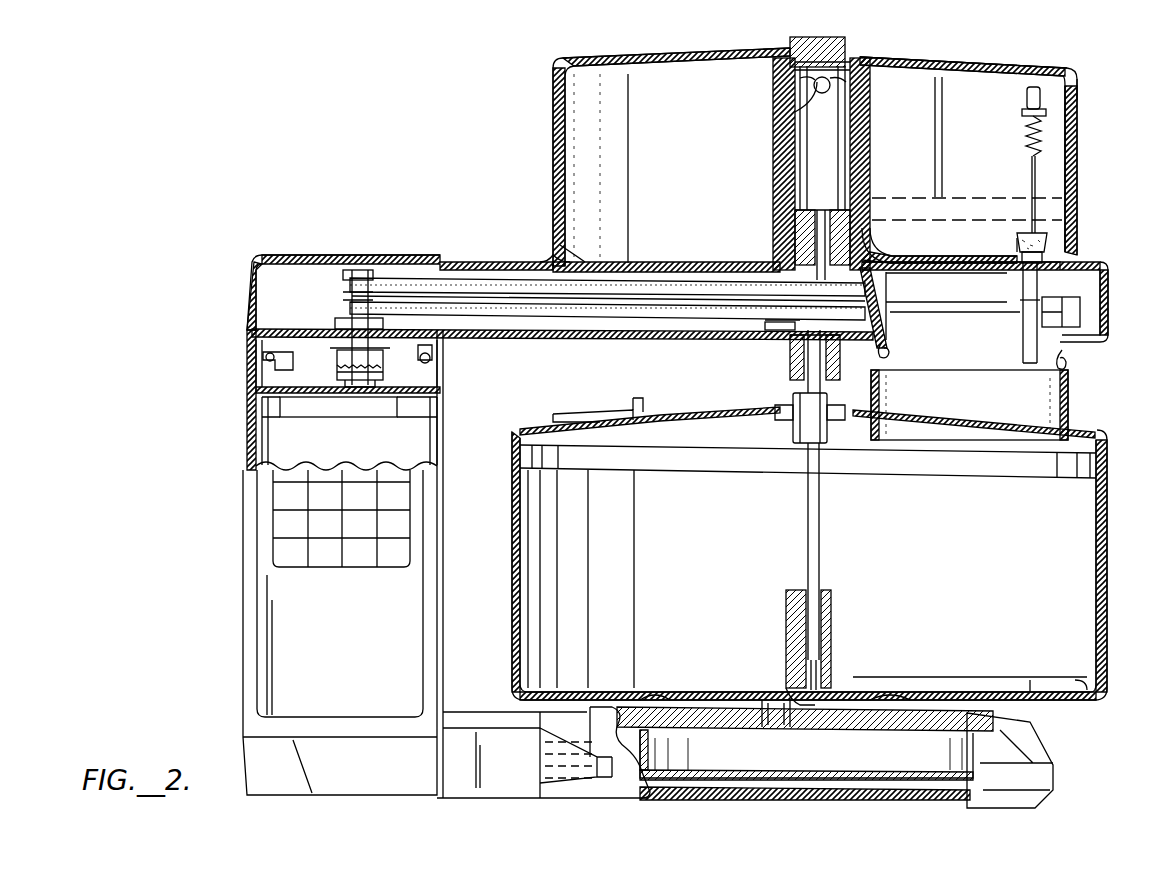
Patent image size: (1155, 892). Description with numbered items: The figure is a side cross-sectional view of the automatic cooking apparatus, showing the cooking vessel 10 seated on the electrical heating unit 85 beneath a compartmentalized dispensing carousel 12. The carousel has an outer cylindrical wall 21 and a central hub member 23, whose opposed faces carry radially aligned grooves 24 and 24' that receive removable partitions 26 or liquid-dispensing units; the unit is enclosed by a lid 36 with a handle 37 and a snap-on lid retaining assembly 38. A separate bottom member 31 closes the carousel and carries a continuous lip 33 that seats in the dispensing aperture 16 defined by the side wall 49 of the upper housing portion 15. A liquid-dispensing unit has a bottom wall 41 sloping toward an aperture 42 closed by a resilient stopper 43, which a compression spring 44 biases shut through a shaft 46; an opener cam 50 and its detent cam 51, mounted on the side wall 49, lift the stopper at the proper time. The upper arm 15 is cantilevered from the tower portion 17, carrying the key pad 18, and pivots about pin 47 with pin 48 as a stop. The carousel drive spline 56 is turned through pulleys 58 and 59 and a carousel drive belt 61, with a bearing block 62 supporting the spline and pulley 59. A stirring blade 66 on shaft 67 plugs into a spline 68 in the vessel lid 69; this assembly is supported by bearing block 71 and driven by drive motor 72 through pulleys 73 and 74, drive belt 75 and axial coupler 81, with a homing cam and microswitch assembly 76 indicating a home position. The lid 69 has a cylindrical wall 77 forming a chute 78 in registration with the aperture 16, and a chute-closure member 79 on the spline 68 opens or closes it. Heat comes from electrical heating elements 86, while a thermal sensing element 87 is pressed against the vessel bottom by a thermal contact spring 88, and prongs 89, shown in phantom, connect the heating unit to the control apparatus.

The cooking vessel 10 is at (1107, 592).
The compartmentalized dispensing structure 12 is at (1102, 120).
The upper portion of the housing 15 is at (500, 237).
The dispensing aperture 16 is at (962, 334).
The central tower portion 17 is at (230, 596).
The key pad 18 is at (290, 528).
The outer cylindrical wall 21 is at (553, 92).
The hub member 23 is at (773, 150).
The groove 24 is at (815, 164).
The groove 24' is at (1084, 169).
The removable partition 26 is at (590, 160).
The bottom member 31 is at (560, 262).
The lip 33 is at (886, 282).
The lid 36 is at (995, 66).
The handle 37 is at (845, 42).
The snap-on lid retaining assembly 38 is at (798, 105).
The bottom wall 41 is at (945, 256).
The aperture 42 is at (1004, 246).
The resilient stopper 43 is at (1020, 233).
The compression spring 44 is at (1027, 142).
The shaft 46 is at (1032, 185).
The pin 47 is at (263, 357).
The pin 48 is at (425, 363).
The side wall 49 is at (889, 332).
The opener cam 50 is at (1023, 308).
The detent cam 51 is at (1080, 313).
The carousel drive spline 56 is at (832, 182).
The pulley 58 is at (343, 275).
The pulley 59 is at (882, 308).
The carousel drive belt 61 is at (402, 255).
The bearing block 62 is at (870, 219).
The stirring blade 66 is at (965, 677).
The shaft 67 is at (819, 533).
The spline 68 is at (827, 437).
The lid of the cooking vessel 69 is at (720, 408).
The bearing block 71 is at (840, 358).
The drive motor 72 is at (247, 433).
The pulley 73 is at (352, 303).
The pulley 74 is at (760, 339).
The drive belt 75 is at (545, 320).
The homing cam and microswitch assembly 76 is at (775, 339).
The cylindrical wall 77 is at (883, 372).
The chute 78 is at (968, 407).
The chute-closure member 79 is at (1018, 452).
The axial coupler 81 is at (337, 368).
The electrical heating unit 85 is at (1065, 745).
The electrical heating elements 86 is at (720, 700).
The thermal sensing element 87 is at (782, 700).
The thermal contact spring 88 is at (785, 737).
The prongs 89 is at (533, 755).